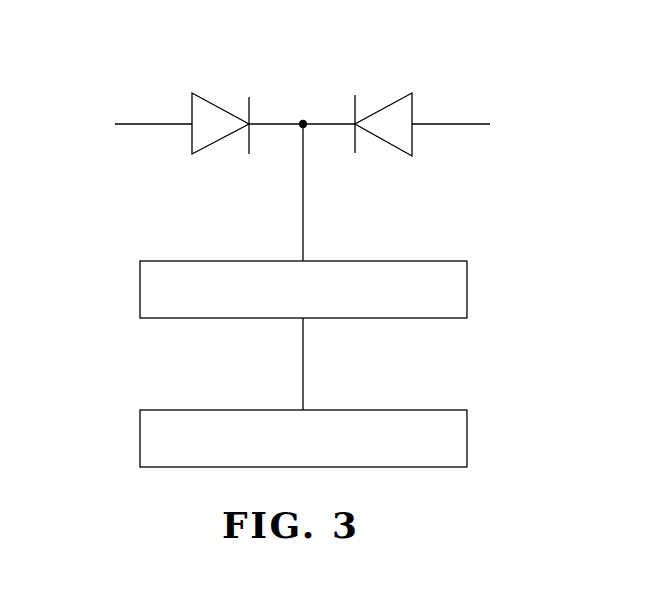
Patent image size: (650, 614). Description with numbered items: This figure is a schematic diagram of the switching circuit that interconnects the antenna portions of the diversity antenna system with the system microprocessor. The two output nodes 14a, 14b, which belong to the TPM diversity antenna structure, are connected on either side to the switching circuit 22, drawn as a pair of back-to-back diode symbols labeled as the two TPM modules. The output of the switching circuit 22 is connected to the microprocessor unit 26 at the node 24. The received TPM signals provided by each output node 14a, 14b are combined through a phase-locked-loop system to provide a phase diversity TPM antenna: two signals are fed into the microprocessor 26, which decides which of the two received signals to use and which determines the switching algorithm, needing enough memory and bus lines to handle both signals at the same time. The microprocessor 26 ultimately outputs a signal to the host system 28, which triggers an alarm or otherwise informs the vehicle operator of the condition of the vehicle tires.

The output node 14a is at (135, 122).
The output node 14b is at (470, 122).
The switching circuit 22 is at (254, 53).
The node 24 is at (268, 159).
The microprocessor unit 26 is at (443, 261).
The host system 28 is at (443, 410).